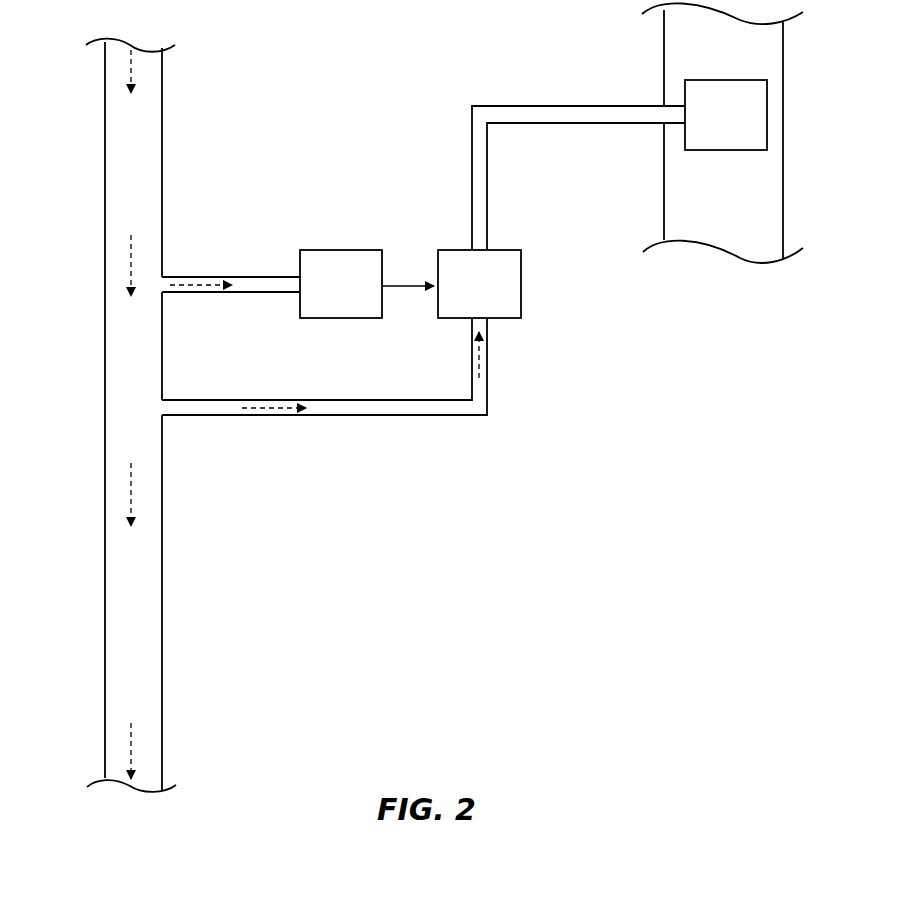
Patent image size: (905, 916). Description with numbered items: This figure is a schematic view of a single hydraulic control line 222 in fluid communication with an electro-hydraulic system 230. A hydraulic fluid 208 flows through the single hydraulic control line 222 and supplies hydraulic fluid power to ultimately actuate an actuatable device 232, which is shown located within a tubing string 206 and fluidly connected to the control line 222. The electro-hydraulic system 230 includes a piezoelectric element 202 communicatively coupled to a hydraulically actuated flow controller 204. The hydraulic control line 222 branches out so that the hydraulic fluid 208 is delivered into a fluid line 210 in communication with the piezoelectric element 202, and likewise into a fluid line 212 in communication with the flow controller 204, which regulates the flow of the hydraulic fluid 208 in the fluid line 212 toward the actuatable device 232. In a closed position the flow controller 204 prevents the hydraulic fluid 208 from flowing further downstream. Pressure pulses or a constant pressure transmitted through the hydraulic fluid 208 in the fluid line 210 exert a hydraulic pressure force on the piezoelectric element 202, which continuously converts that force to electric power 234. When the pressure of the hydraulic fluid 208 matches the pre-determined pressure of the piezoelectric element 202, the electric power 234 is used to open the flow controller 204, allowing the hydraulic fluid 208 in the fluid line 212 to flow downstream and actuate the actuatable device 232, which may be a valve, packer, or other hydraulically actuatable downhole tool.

The piezoelectric element 202 is at (322, 297).
The hydraulically actuated flow controller 204 is at (460, 297).
The tubing string 206 is at (783, 162).
The hydraulic fluid 208 is at (132, 255).
The fluid line 210 is at (265, 293).
The fluid line 212 is at (262, 417).
The single hydraulic control line 222 is at (105, 185).
The electro-hydraulic system 230 is at (410, 275).
The actuatable device 232 is at (707, 127).
The electric power 234 is at (414, 287).